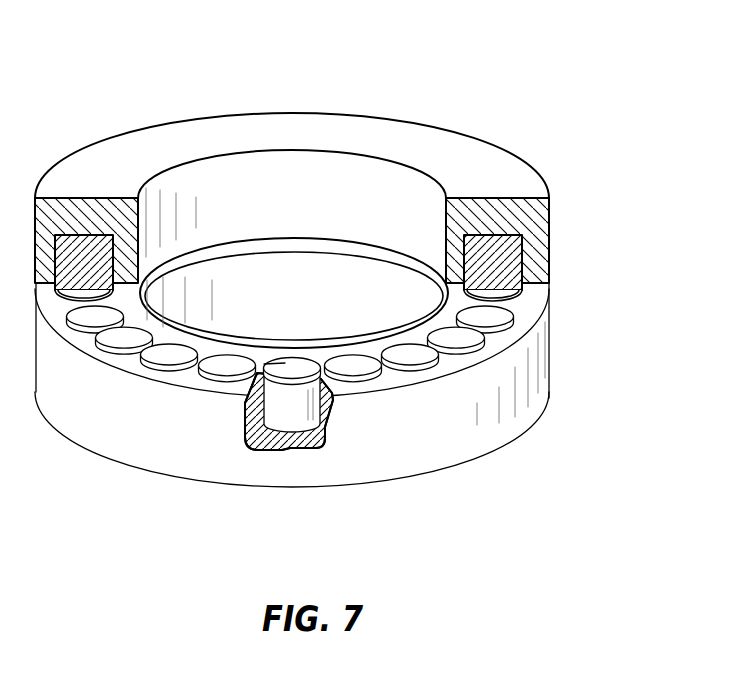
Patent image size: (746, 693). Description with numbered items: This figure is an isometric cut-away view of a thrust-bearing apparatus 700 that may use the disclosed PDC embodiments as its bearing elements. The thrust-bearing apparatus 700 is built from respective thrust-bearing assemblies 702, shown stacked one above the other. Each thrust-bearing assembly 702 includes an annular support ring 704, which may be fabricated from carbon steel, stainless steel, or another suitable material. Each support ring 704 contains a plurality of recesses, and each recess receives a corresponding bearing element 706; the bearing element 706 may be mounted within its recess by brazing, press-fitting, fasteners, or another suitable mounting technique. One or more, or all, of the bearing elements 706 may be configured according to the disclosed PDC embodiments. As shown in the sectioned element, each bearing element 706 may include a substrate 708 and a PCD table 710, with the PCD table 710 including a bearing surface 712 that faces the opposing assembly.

The thrust-bearing apparatus 700 is at (360, 294).
The thrust-bearing assembly 702 is at (360, 313).
The annular support ring 704 is at (522, 228).
The bearing element 706 is at (270, 438).
The substrate 708 is at (288, 389).
The PCD table 710 is at (255, 378).
The bearing surface 712 is at (262, 364).